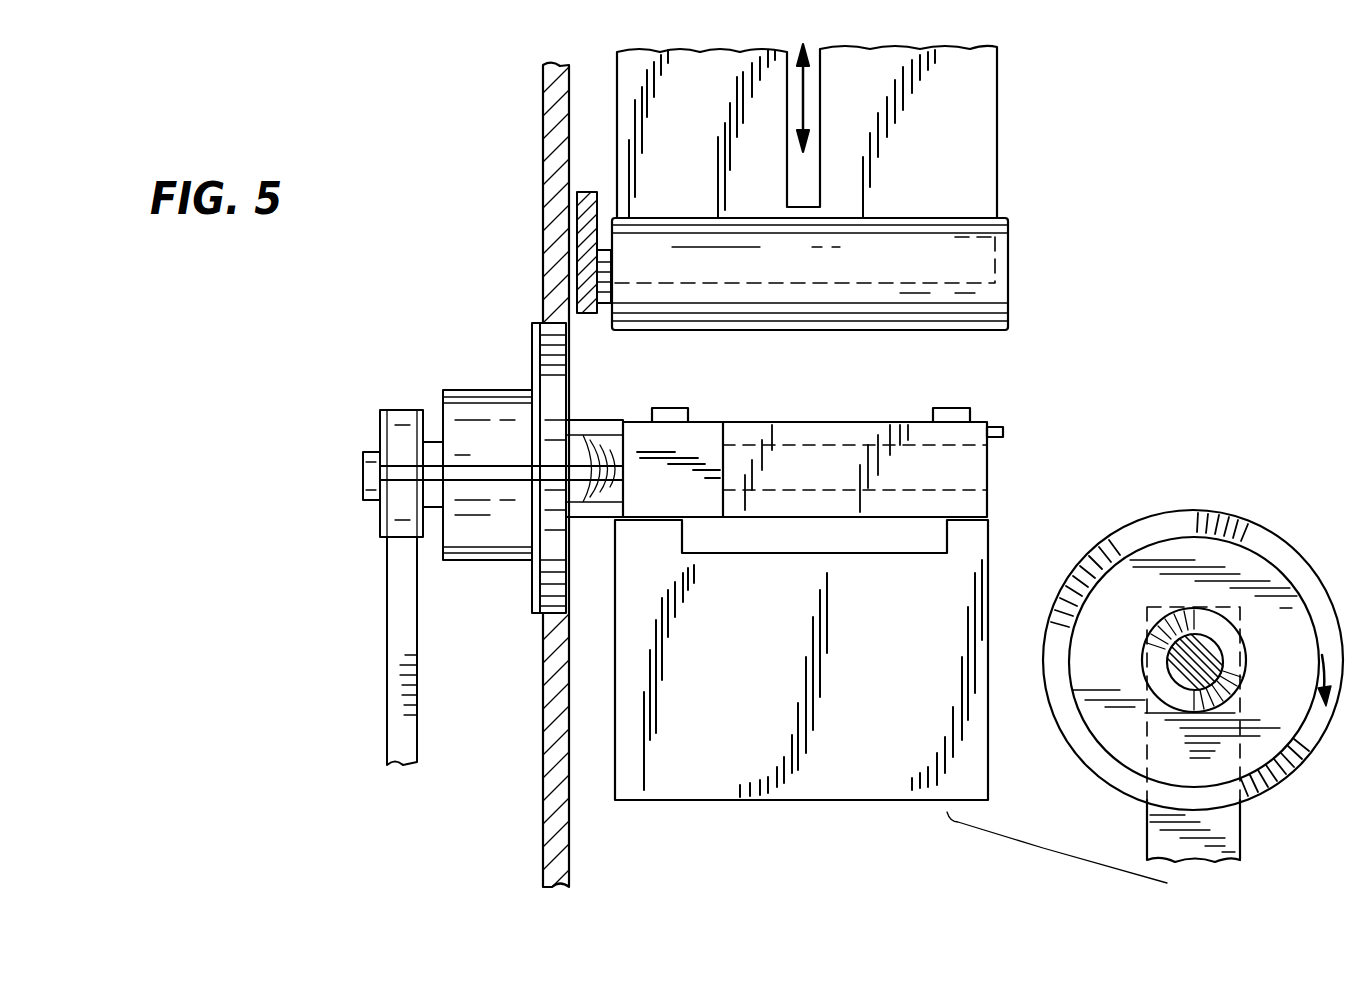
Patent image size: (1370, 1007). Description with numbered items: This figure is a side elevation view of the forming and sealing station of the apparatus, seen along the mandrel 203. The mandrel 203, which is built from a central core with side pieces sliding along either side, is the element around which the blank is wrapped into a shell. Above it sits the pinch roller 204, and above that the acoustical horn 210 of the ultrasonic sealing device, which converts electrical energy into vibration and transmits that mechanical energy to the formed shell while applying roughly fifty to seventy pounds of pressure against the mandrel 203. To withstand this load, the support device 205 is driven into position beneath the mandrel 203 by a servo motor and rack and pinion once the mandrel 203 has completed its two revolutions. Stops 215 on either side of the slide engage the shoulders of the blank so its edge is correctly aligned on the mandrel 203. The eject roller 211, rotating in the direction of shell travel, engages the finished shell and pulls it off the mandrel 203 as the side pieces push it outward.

The acoustical horn 210 is at (1000, 185).
The pinch roller 204 is at (1012, 315).
The mandrel 203 is at (786, 416).
The stops 215 is at (670, 404).
The support device 205 is at (782, 806).
The eject roller 211 is at (1295, 782).